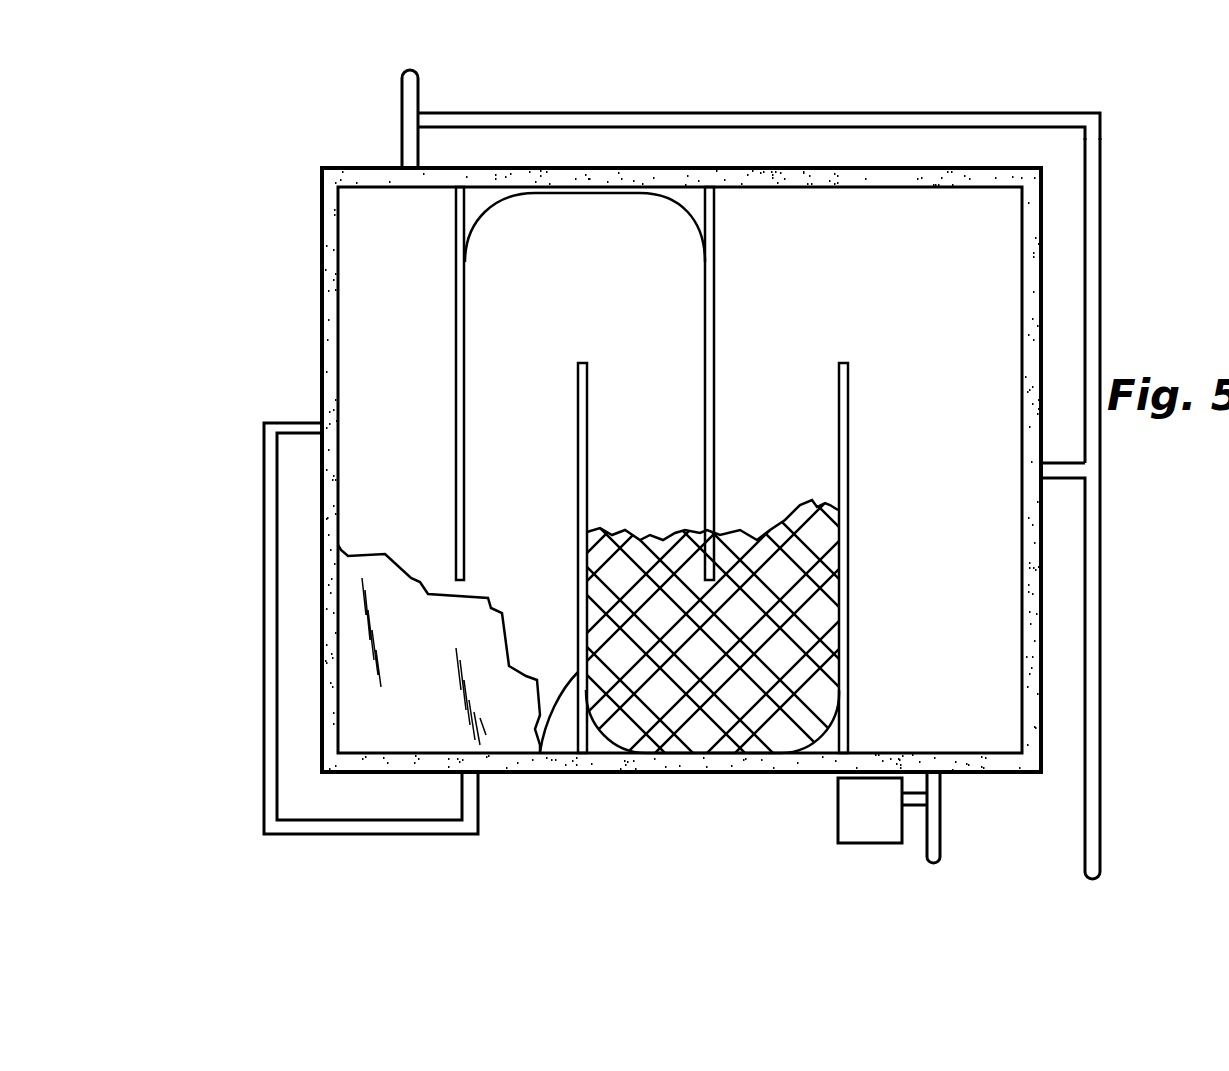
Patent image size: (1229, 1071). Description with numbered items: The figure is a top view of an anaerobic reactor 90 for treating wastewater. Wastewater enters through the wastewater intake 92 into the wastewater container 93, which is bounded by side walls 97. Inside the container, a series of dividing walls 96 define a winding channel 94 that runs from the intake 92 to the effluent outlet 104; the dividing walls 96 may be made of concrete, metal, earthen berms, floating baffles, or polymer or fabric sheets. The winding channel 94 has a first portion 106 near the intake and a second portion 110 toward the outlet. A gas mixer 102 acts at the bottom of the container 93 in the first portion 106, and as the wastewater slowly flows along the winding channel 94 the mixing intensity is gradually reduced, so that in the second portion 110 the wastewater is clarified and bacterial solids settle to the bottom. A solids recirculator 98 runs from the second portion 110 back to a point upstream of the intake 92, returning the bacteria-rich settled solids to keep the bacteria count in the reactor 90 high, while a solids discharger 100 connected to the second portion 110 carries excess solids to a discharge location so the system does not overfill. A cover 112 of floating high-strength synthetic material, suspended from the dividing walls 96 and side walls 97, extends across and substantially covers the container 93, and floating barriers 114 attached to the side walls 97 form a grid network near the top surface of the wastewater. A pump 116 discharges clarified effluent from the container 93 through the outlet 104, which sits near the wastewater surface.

The anaerobic reactor 90 is at (217, 125).
The wastewater intake 92 is at (403, 165).
The wastewater container 93 is at (320, 388).
The winding channel 94 is at (383, 282).
The dividing walls 96 is at (456, 408).
The side walls 97 is at (331, 318).
The solids recirculator 98 is at (602, 122).
The solids discharger 100 is at (1097, 805).
The gas mixer 102 is at (274, 526).
The effluent outlet 104 is at (940, 803).
The first portion 106 is at (354, 232).
The second portion 110 is at (977, 570).
The cover 112 is at (407, 641).
The floating barriers 114 is at (792, 511).
The pump 116 is at (838, 802).